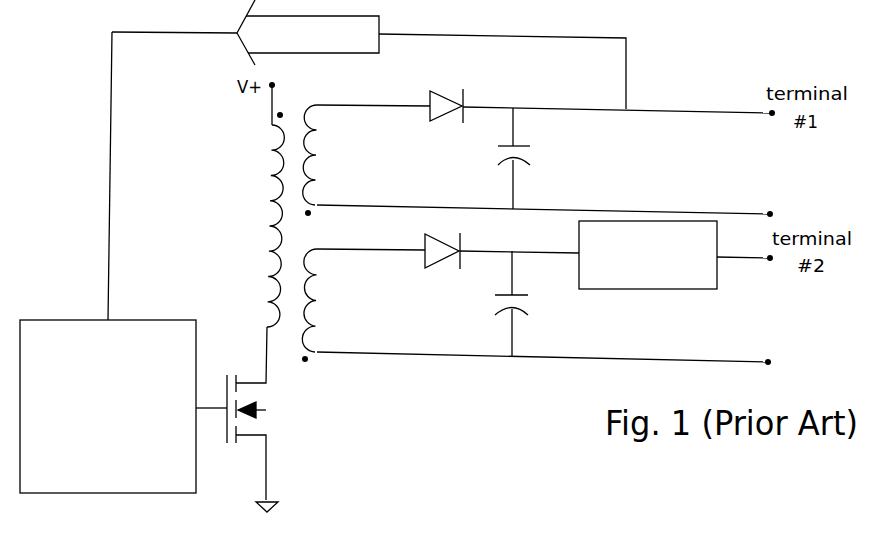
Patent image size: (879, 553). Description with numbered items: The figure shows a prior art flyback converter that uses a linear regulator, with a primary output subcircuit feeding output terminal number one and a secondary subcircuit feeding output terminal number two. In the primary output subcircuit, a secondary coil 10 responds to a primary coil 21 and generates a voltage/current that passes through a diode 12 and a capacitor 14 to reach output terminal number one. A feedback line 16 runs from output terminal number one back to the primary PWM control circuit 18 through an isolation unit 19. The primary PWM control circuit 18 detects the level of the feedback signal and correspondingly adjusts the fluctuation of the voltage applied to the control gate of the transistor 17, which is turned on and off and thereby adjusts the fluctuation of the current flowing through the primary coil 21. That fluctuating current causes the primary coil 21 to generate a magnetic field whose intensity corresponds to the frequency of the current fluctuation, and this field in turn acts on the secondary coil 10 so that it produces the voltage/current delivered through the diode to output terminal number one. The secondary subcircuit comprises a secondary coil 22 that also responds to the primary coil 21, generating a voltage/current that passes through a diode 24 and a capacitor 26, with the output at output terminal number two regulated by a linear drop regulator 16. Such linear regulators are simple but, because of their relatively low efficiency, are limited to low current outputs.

The secondary coil 10 is at (322, 155).
The diode 12 is at (465, 89).
The capacitor 14 is at (533, 155).
The feedback line 16 is at (603, 39).
The transistor 17 is at (263, 402).
The primary PWM control circuit 18 is at (125, 494).
The isolation unit 19 is at (247, 54).
The primary coil 21 is at (262, 221).
The secondary coil 22 is at (323, 296).
The diode 24 is at (462, 235).
The capacitor 26 is at (531, 306).